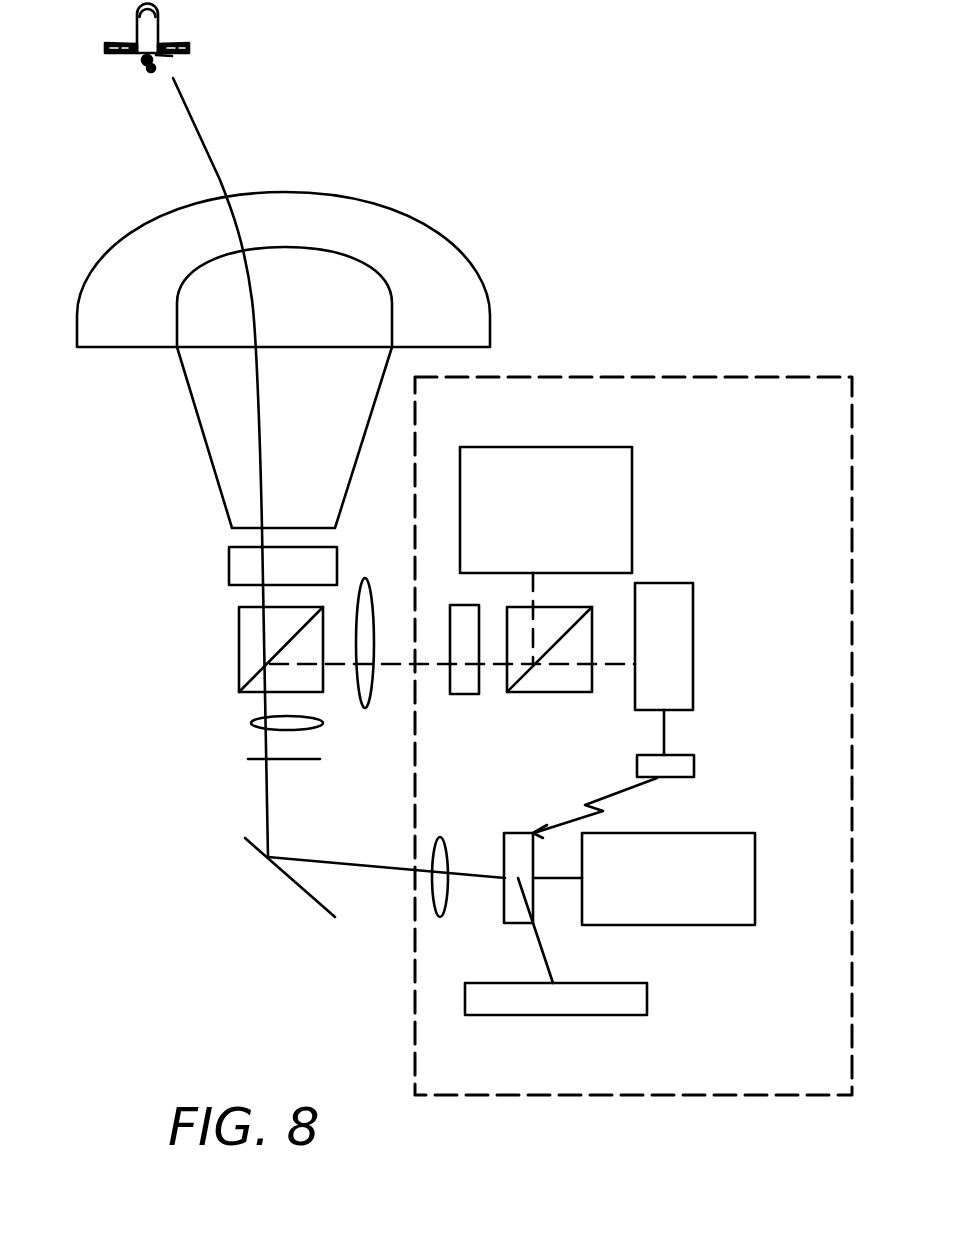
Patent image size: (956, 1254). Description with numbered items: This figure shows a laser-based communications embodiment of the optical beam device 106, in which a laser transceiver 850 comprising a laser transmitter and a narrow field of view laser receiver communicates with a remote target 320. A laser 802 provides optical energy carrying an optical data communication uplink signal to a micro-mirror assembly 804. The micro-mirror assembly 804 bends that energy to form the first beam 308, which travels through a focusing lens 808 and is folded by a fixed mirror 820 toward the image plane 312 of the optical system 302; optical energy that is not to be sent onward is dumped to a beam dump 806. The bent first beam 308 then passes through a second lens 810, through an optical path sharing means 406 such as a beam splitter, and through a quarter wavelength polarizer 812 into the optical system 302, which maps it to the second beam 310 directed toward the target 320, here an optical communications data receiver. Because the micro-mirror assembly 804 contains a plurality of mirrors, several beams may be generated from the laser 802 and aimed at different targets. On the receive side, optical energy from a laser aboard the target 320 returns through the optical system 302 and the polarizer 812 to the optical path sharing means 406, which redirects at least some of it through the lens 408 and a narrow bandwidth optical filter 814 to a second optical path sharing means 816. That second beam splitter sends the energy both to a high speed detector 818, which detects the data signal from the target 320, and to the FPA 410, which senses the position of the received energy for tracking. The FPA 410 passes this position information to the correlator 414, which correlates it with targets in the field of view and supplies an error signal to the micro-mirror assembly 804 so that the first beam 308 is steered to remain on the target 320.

The optical beam device 106 is at (582, 127).
The optical system 302 is at (140, 393).
The first beam 308 is at (267, 770).
The second beam 310 is at (212, 152).
The image plane 312 is at (320, 759).
The target 320 is at (143, 64).
The optical path sharing means 406 is at (238, 618).
The lens 408 is at (367, 578).
The FPA 410 is at (656, 583).
The correlator 414 is at (683, 755).
The laser 802 is at (755, 877).
The micro-mirror assembly 804 is at (507, 925).
The beam dump 806 is at (615, 1015).
The focusing lens 808 is at (445, 835).
The second lens 810 is at (252, 723).
The quarter wavelength polarizer 812 is at (229, 567).
The narrow bandwidth optical filter 814 is at (465, 694).
The second optical path sharing means 816 is at (548, 694).
The high speed detector 818 is at (632, 466).
The fixed mirror 820 is at (295, 886).
The laser transceiver 850 is at (590, 377).